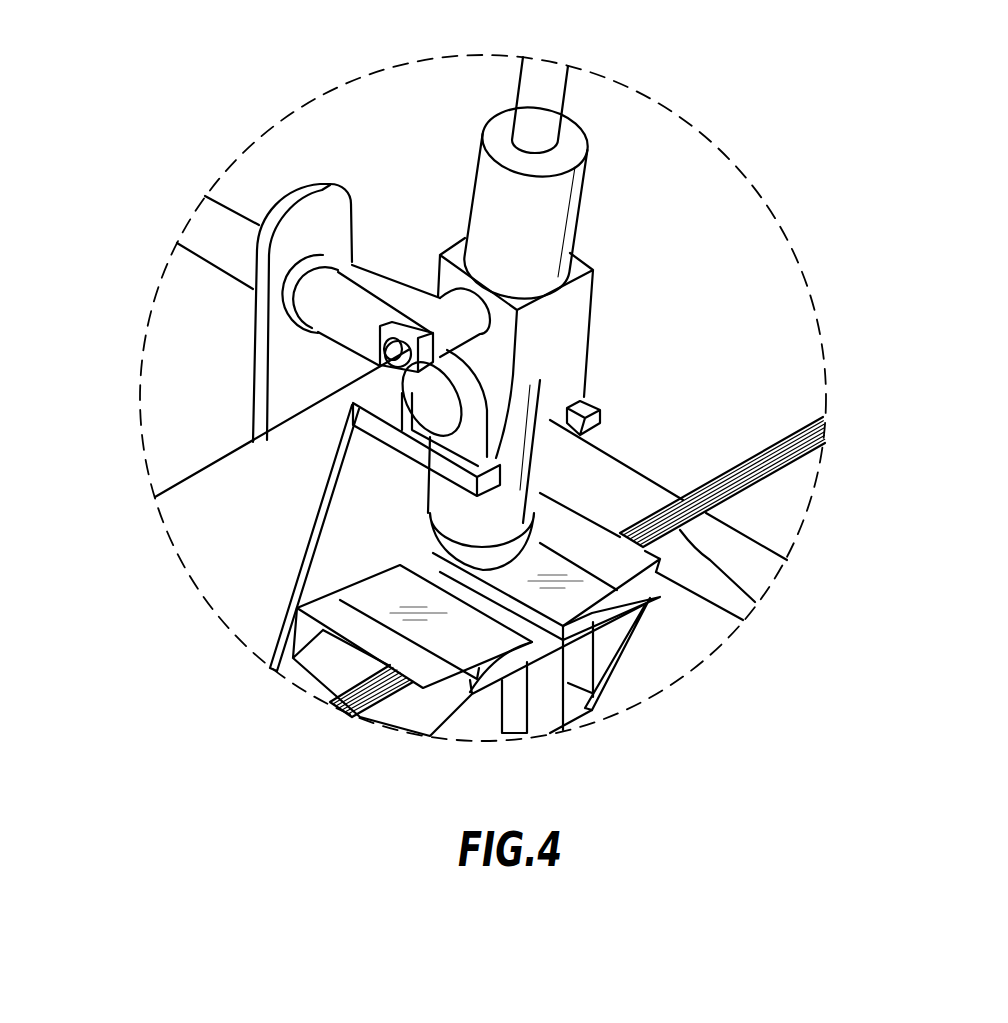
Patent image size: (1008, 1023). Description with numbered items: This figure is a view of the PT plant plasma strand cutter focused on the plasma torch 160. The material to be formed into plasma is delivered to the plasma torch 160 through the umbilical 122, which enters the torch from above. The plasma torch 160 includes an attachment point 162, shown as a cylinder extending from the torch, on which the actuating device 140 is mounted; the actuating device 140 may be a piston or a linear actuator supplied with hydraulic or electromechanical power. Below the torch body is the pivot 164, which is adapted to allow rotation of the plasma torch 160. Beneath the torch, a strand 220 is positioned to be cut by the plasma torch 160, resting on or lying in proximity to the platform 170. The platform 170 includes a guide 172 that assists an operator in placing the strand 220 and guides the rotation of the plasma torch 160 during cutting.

The umbilical 122 is at (563, 96).
The plasma torch 160 is at (583, 193).
The attachment point 162 is at (447, 308).
The pivot 164 is at (495, 436).
The actuating device 140 is at (217, 268).
The platform 170 is at (233, 588).
The guide 172 is at (583, 588).
The strand 220 is at (768, 580).